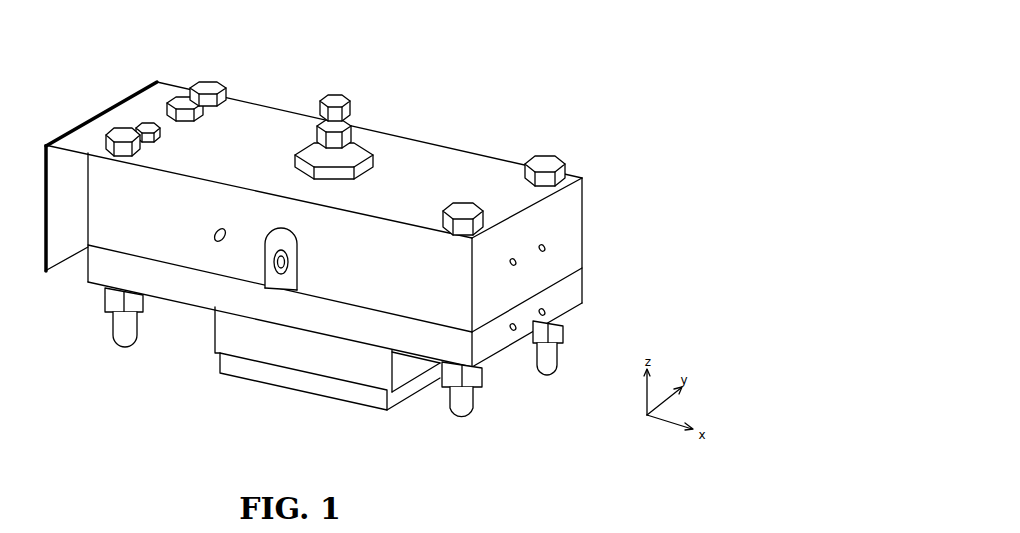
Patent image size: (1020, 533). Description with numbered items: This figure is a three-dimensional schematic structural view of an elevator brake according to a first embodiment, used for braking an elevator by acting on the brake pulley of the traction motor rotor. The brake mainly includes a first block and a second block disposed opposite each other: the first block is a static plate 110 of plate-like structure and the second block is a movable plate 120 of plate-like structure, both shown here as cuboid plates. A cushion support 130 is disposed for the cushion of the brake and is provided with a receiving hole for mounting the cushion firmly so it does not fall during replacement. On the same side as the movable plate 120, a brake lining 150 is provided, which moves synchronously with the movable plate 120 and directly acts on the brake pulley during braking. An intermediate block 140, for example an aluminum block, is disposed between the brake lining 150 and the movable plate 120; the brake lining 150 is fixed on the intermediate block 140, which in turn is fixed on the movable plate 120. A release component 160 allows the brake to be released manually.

The static plate 110 is at (570, 232).
The movable plate 120 is at (572, 290).
The cushion support 130 is at (266, 248).
The intermediate block 140 is at (237, 344).
The brake lining 150 is at (367, 398).
The release component 160 is at (368, 137).